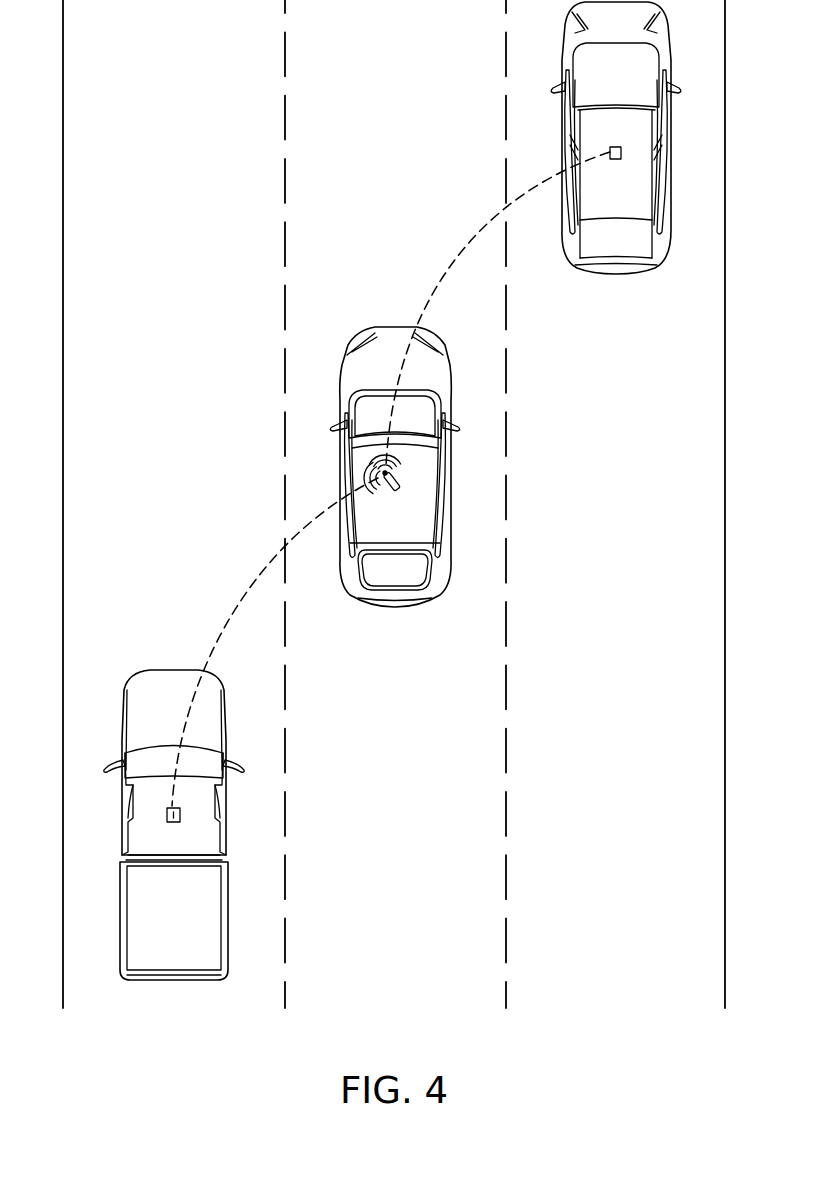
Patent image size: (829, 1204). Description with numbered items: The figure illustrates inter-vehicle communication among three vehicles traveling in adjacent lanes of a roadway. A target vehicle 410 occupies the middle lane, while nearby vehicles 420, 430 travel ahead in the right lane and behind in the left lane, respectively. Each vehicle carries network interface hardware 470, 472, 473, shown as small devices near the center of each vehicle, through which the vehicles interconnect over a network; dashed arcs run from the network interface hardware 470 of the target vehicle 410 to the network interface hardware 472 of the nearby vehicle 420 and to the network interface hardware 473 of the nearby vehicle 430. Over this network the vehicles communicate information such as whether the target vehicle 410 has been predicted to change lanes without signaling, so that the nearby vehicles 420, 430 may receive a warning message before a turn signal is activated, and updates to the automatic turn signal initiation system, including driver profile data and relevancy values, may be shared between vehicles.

The target vehicle 410 is at (393, 607).
The nearby vehicle 420 is at (615, 274).
The nearby vehicle 430 is at (172, 982).
The network interface hardware 470 is at (400, 487).
The network interface hardware 472 is at (622, 153).
The network interface hardware 473 is at (181, 815).